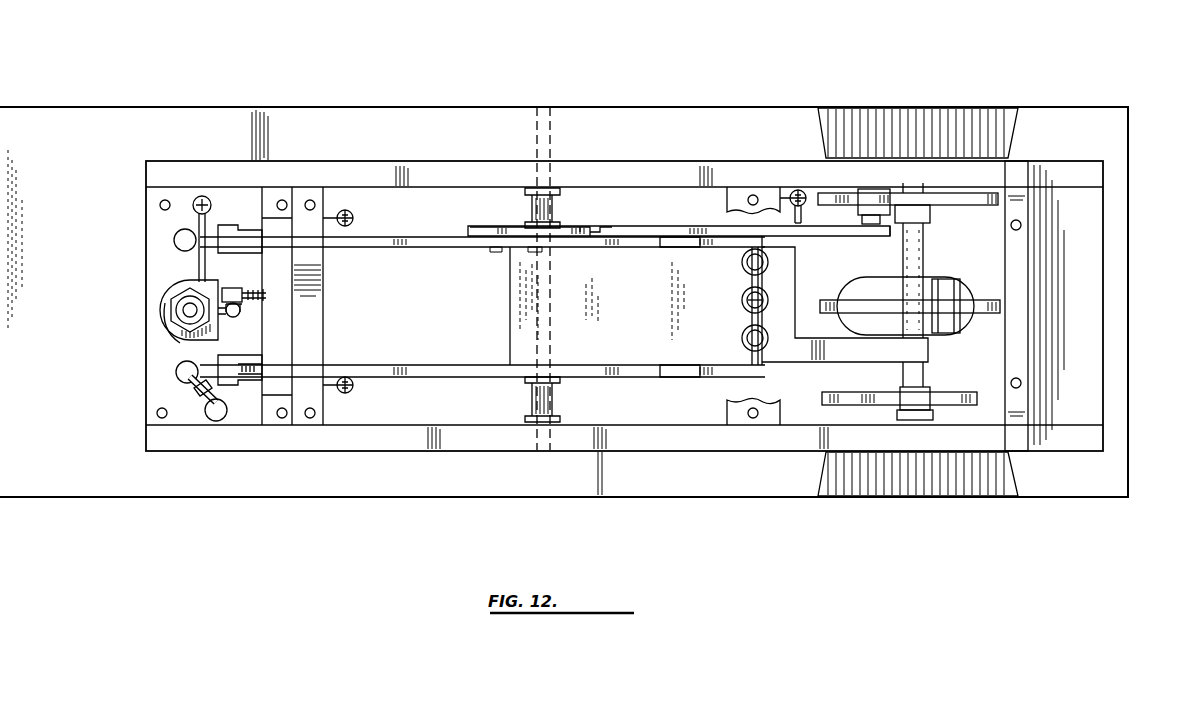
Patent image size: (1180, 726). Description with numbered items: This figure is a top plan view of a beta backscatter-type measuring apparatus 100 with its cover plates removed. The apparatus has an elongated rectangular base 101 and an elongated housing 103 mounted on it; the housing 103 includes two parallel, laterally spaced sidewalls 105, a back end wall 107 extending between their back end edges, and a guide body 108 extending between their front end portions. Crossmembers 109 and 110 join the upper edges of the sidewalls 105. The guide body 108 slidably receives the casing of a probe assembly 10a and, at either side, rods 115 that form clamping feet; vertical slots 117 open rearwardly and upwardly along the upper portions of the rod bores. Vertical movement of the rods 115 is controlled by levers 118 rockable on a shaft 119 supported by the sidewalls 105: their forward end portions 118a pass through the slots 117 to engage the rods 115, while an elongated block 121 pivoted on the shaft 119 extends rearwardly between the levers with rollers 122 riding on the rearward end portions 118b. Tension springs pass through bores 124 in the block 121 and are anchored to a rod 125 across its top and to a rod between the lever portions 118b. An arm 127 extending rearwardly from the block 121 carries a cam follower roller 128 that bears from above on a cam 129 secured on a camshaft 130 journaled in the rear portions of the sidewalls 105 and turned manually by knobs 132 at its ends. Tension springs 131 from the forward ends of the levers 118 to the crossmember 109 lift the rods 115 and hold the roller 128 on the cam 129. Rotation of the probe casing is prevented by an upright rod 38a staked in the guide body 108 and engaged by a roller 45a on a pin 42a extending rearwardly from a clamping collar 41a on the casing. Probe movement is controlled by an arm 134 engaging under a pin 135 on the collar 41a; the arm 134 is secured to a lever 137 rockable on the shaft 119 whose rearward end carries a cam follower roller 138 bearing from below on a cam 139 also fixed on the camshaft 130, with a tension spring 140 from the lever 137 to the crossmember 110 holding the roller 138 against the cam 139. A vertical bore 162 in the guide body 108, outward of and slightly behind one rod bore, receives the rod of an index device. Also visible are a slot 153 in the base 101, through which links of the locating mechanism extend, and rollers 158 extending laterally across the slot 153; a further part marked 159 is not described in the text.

The beta backscatter-type measuring apparatus 100 is at (948, 72).
The base 101 is at (527, 107).
The housing 103 is at (440, 162).
The sidewalls 105 is at (360, 160).
The back end wall 107 is at (1085, 345).
The guide body 108 is at (156, 402).
The crossmember 109 is at (340, 322).
The crossmember 110 is at (742, 192).
The rods 115 is at (175, 240).
The vertical slots 117 is at (224, 236).
The levers 118 is at (604, 246).
The forward end portions of levers 118a is at (222, 366).
The rearward end portions of levers 118b is at (628, 229).
The shaft 119 is at (545, 347).
The elongated block 121 is at (652, 308).
The rollers 122 is at (672, 226).
The bores 124 is at (736, 310).
The rod 125 is at (745, 316).
The arm 127 is at (806, 364).
The cam follower roller 128 is at (920, 400).
The cam 129 is at (976, 398).
The camshaft 130 is at (918, 244).
The tension springs 131 is at (354, 219).
The knobs 132 is at (985, 108).
The arm 134 is at (418, 237).
The pin 135 is at (200, 258).
The lever 137 is at (818, 236).
The cam follower roller 138 is at (886, 192).
The cam 139 is at (826, 190).
The tension spring 140 is at (798, 210).
The slot 153 is at (858, 288).
The rollers 158 is at (952, 288).
The rod 159 is at (830, 292).
The vertical bore 162 is at (222, 422).
The probe assembly 10a is at (164, 327).
The upright rod 38a is at (238, 318).
The clamping collar 41a is at (158, 308).
The pin 42a is at (262, 282).
The roller 45a is at (240, 282).